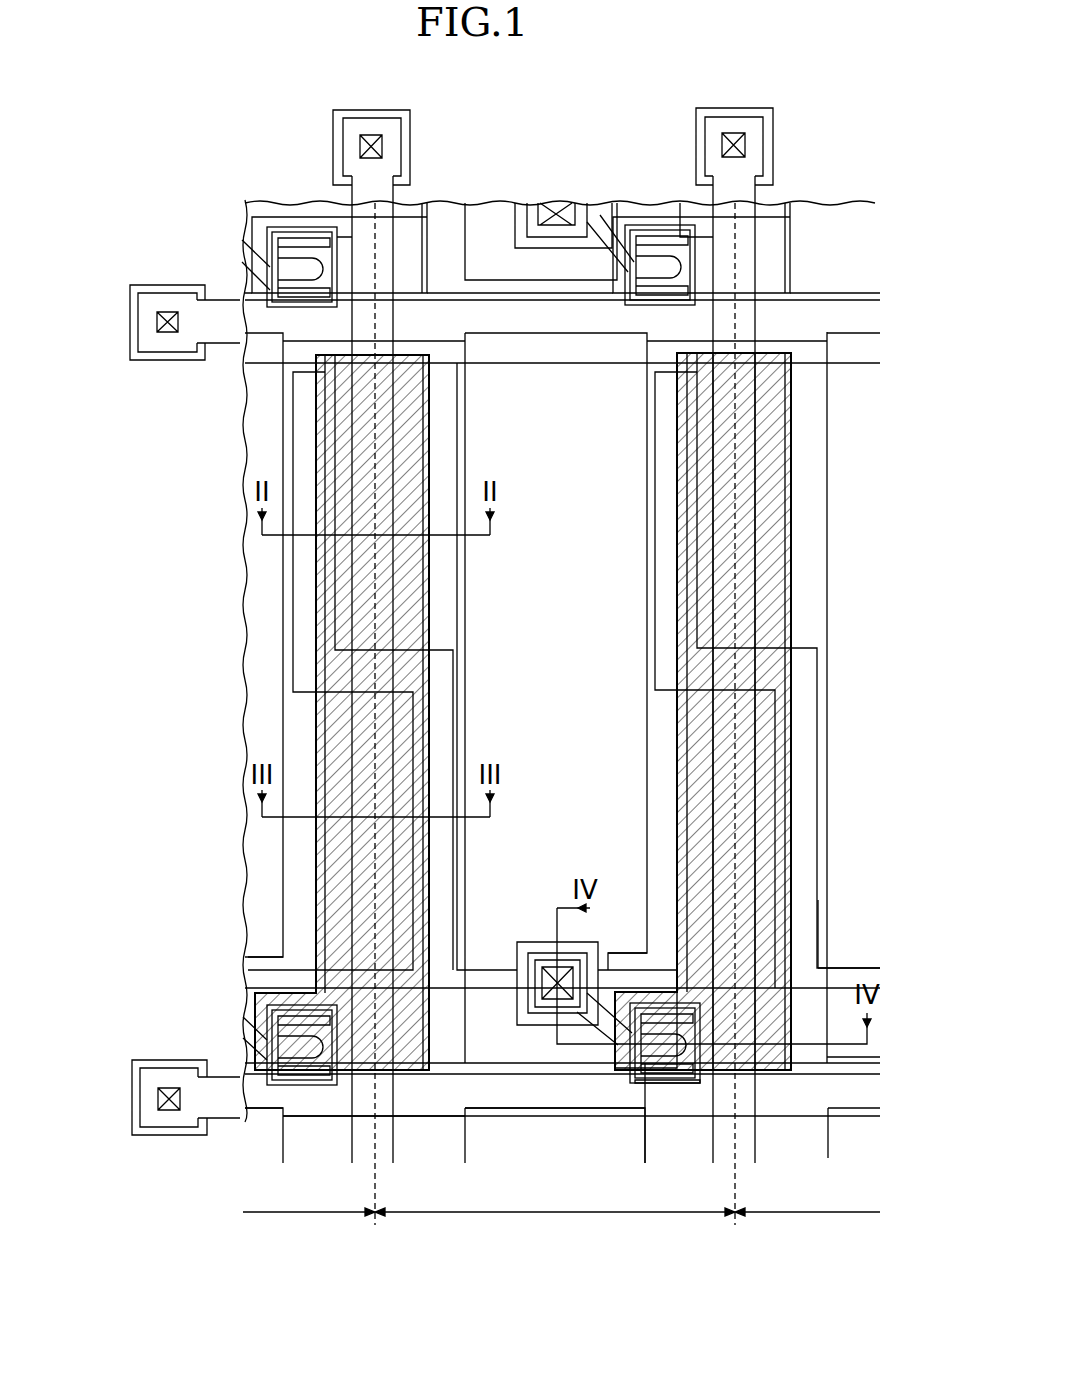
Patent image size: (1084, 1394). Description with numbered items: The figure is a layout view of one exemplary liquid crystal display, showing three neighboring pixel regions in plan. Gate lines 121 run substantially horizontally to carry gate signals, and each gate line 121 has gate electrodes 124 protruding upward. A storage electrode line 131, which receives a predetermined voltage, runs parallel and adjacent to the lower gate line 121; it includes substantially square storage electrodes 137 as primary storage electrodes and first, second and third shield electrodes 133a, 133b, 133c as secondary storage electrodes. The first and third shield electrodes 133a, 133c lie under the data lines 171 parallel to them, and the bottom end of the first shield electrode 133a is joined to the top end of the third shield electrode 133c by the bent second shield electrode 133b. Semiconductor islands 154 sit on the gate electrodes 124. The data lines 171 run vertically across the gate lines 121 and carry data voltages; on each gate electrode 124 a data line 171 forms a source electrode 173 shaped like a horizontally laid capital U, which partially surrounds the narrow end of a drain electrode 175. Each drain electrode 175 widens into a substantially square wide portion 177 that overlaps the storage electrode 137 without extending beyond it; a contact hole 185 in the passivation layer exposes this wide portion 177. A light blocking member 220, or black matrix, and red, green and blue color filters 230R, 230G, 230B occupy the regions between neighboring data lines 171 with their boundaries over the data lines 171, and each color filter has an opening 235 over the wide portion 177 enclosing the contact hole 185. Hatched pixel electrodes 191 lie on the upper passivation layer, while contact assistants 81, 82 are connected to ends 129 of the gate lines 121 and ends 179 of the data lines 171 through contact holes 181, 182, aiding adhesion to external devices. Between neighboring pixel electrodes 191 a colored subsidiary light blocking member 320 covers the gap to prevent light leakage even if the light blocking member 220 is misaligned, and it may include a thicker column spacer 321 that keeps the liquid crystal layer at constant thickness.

The contact assistant 81 is at (130, 334).
The contact assistant 82 is at (410, 138).
The gate line 121 is at (475, 1117).
The gate electrode 124 is at (632, 992).
The end of gate line 129 is at (176, 293).
The storage electrode line 131 is at (848, 968).
The first shield electrode 133a is at (333, 610).
The second shield electrode 133b is at (430, 670).
The third shield electrode 133c is at (463, 740).
The storage electrode 137 is at (520, 945).
The semiconductor island 154 is at (658, 1100).
The data line 171 is at (717, 805).
The source electrode 173 is at (685, 1100).
The drain electrode 175 is at (630, 1100).
The wide portion of drain electrode 177 is at (546, 958).
The end of data line 179 is at (333, 137).
The contact hole 181 is at (166, 313).
The contact hole 182 is at (372, 135).
The contact hole 185 is at (548, 213).
The pixel electrode 191 is at (791, 478).
The light blocking member 220 is at (548, 1115).
The red color filter 230R is at (309, 1227).
The green color filter 230G is at (555, 1227).
The blue color filter 230B is at (807, 1227).
The opening 235 is at (535, 997).
The subsidiary light blocking member 320 is at (678, 568).
The column spacer 321 is at (613, 1100).